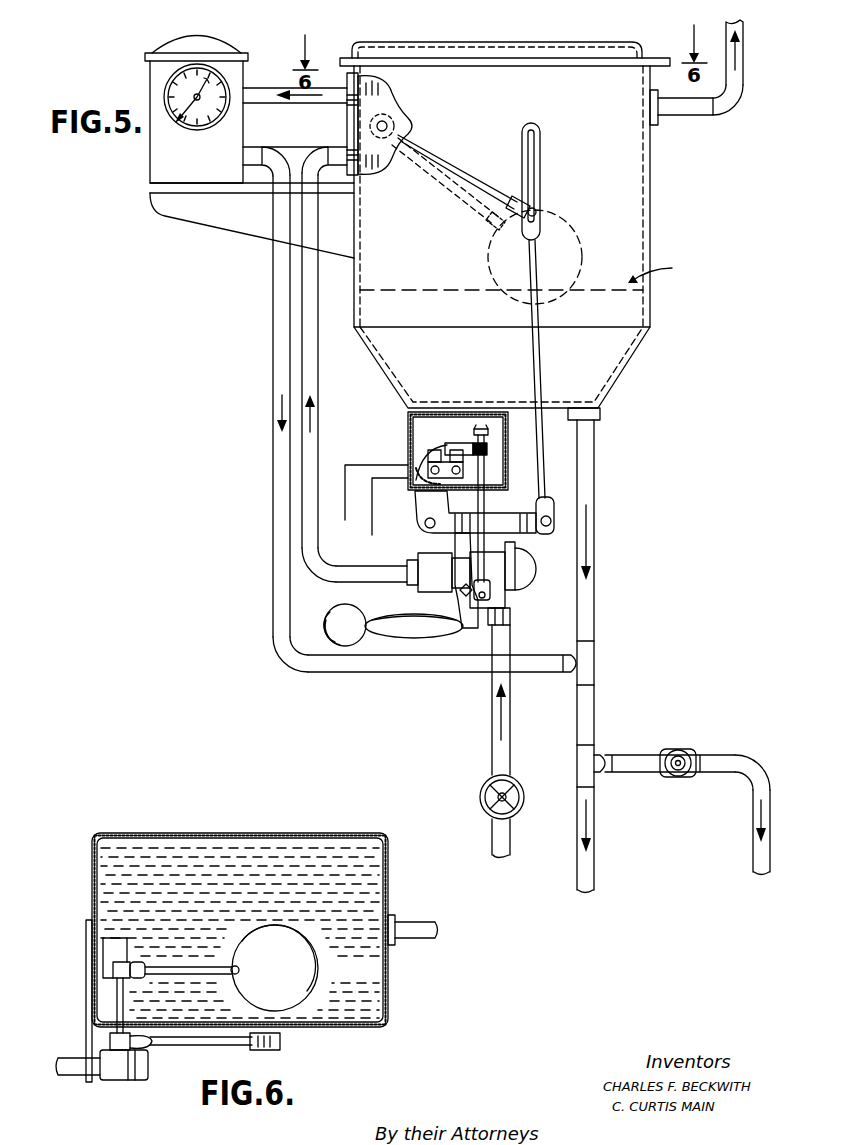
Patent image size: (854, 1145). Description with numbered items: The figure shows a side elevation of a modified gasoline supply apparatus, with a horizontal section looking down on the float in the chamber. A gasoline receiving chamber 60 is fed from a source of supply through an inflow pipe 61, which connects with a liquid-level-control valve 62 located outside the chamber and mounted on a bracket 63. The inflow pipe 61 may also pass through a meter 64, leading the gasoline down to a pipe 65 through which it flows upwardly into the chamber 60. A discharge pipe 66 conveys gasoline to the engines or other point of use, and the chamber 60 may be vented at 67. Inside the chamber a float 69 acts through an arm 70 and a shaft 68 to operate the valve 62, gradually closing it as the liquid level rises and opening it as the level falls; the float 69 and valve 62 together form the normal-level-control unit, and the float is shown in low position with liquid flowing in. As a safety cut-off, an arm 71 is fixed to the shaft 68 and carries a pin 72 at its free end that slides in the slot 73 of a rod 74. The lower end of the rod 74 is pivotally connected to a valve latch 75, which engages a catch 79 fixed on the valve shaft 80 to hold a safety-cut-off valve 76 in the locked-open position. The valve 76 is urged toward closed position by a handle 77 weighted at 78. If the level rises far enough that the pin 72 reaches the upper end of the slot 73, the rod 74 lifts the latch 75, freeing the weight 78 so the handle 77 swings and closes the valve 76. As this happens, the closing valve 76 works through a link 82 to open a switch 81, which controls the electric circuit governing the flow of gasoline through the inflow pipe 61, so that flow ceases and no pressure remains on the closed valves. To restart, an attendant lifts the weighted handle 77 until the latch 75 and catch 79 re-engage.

In FIG. 5, the gasoline receiving chamber 60 is at (651, 236).
In FIG. 6, the gasoline receiving chamber 60 is at (388, 1014).
In FIG. 5, the inflow pipe 61 is at (288, 110).
In FIG. 6, the inflow pipe 61 is at (70, 1078).
In FIG. 5, the liquid-level-control valve 62 is at (388, 108).
In FIG. 5, the bracket 63 is at (347, 121).
In FIG. 6, the bracket 63 is at (86, 1037).
In FIG. 5, the meter 64 is at (150, 172).
In FIG. 5, the pipe 65 is at (594, 476).
In FIG. 5, the discharge pipe 66 is at (597, 872).
In FIG. 5, the vent 67 is at (696, 114).
In FIG. 6, the vent 67 is at (425, 940).
In FIG. 5, the shaft 68 is at (387, 126).
In FIG. 6, the shaft 68 is at (117, 990).
In FIG. 5, the float 69 is at (572, 234).
In FIG. 6, the float 69 is at (275, 968).
In FIG. 5, the arm 70 is at (478, 198).
In FIG. 6, the arm 70 is at (186, 966).
In FIG. 5, the arm 71 is at (498, 186).
In FIG. 6, the arm 71 is at (192, 1046).
In FIG. 5, the pin 72 is at (537, 210).
In FIG. 5, the slot 73 is at (530, 147).
In FIG. 5, the rod 74 is at (545, 367).
In FIG. 6, the rod 74 is at (280, 1050).
In FIG. 5, the valve latch 75 is at (540, 534).
In FIG. 5, the safety-cut-off valve 76 is at (498, 570).
In FIG. 6, the safety-cut-off valve 76 is at (112, 1080).
In FIG. 5, the handle 77 is at (412, 628).
In FIG. 5, the weight 78 is at (345, 640).
In FIG. 5, the catch 79 is at (455, 541).
In FIG. 5, the valve shaft 80 is at (455, 588).
In FIG. 5, the switch 81 is at (445, 442).
In FIG. 5, the link 82 is at (486, 508).